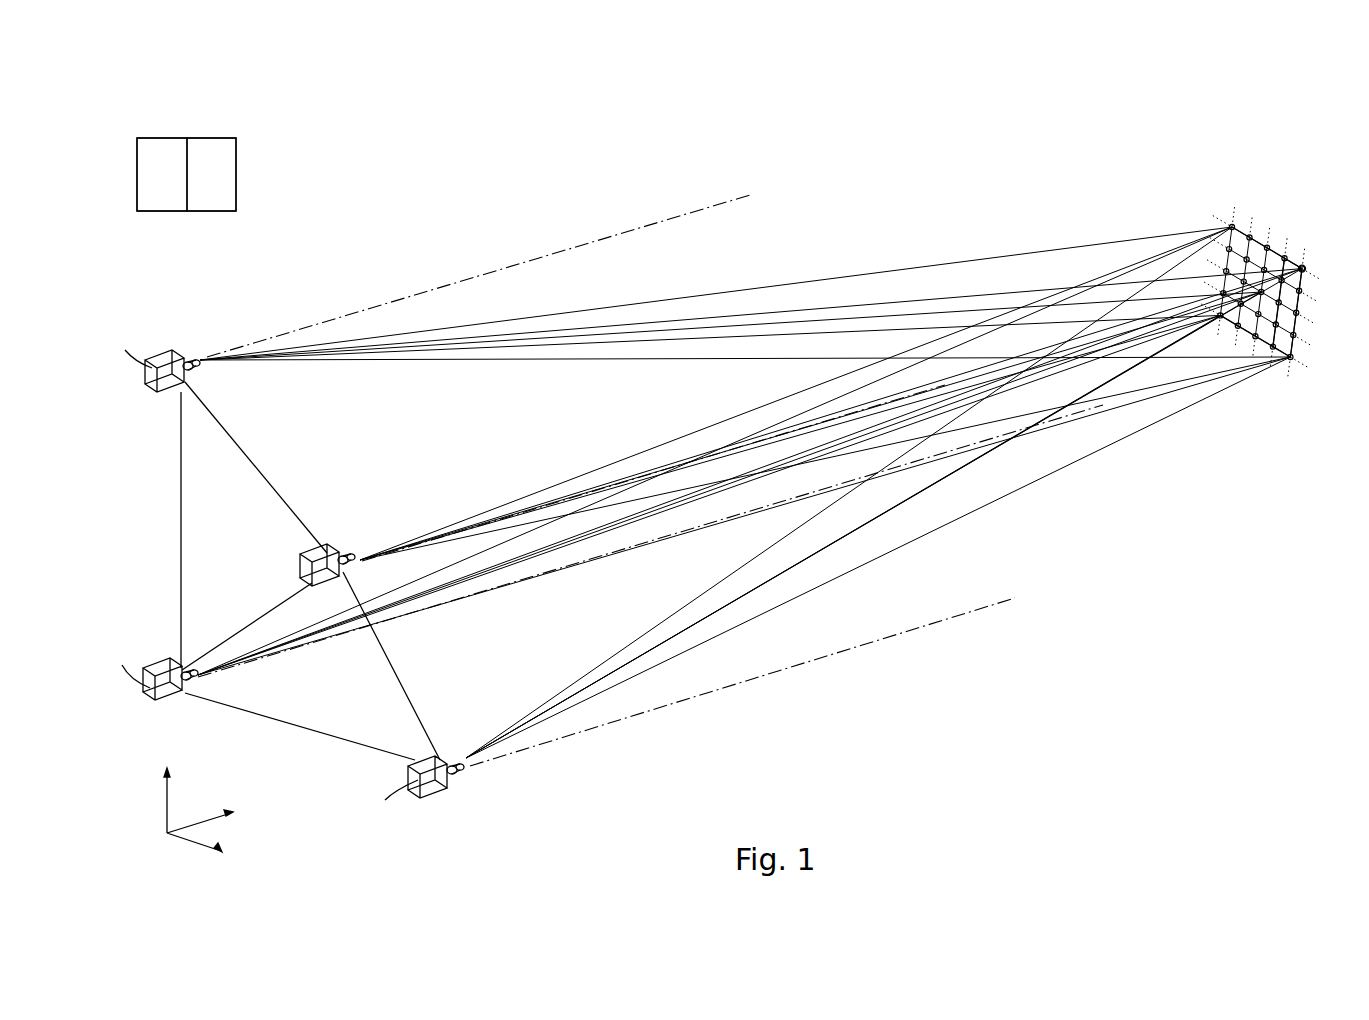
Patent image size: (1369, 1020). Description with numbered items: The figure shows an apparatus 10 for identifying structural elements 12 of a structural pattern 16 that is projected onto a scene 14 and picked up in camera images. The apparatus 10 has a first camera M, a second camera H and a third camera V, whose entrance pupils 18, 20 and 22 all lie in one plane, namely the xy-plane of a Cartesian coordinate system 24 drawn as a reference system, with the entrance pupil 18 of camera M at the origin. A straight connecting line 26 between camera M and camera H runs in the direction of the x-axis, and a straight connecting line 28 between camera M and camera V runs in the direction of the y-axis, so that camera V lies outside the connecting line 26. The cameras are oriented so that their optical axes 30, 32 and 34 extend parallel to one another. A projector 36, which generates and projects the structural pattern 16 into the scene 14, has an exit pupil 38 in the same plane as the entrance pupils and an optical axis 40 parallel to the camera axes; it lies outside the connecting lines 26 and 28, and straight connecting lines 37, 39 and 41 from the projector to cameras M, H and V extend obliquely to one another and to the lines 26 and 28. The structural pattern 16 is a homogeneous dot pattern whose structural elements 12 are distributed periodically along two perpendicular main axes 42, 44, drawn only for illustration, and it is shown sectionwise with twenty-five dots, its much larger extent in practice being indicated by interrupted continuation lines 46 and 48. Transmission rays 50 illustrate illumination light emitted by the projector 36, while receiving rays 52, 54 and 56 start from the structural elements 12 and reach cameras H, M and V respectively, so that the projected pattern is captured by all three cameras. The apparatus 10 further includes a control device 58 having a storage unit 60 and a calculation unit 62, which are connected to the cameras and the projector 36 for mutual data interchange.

The apparatus 10 is at (455, 238).
The structural elements 12 is at (1300, 306).
The scene 14 is at (1324, 182).
The structural pattern 16 is at (1298, 262).
The entrance pupil 18 is at (180, 668).
The entrance pupil 20 is at (438, 798).
The entrance pupil 22 is at (182, 357).
The Cartesian coordinate system 24 is at (156, 812).
The straight connecting line 26 is at (310, 727).
The straight connecting line 28 is at (181, 512).
The optical axis 30 is at (662, 538).
The optical axis 32 is at (735, 686).
The optical axis 34 is at (575, 245).
The projector 36 is at (320, 548).
The straight connecting line 37 is at (250, 625).
The exit pupil 38 is at (350, 556).
The straight connecting line 39 is at (392, 675).
The optical axis 40 is at (622, 482).
The straight connecting line 41 is at (214, 410).
The main axis 42 is at (1263, 242).
The main axis 44 is at (1297, 320).
The interrupted continuation line 46 is at (1285, 240).
The interrupted continuation line 48 is at (1315, 298).
The transmission rays 50 is at (548, 507).
The receiving rays 52 is at (897, 550).
The receiving rays 54 is at (455, 568).
The receiving rays 56 is at (760, 330).
The control device 58 is at (258, 115).
The storage unit 60 is at (158, 152).
The calculation unit 62 is at (228, 176).